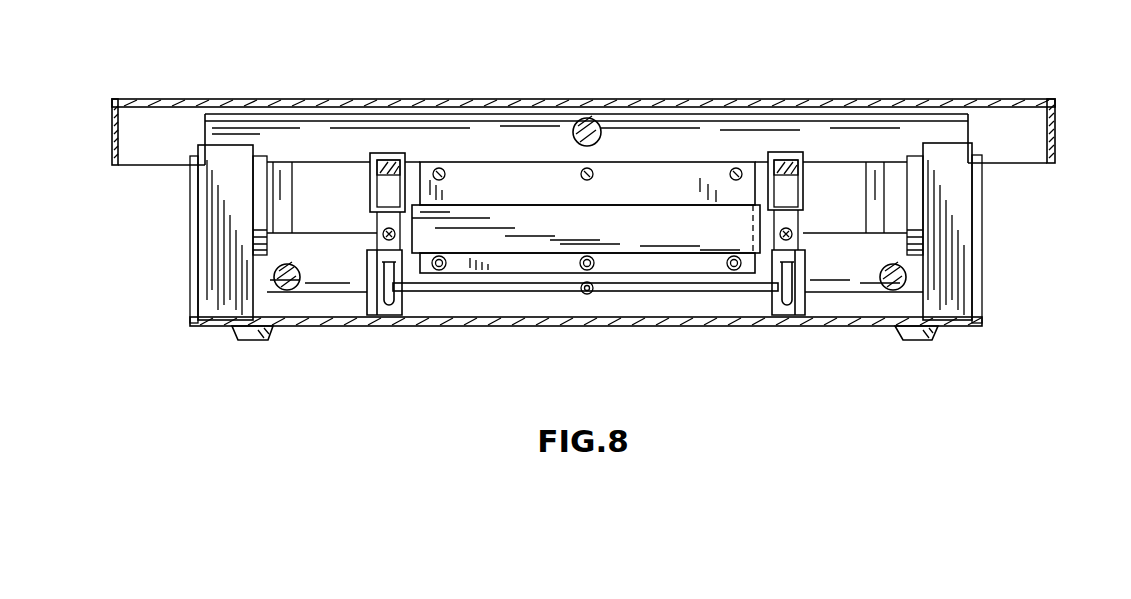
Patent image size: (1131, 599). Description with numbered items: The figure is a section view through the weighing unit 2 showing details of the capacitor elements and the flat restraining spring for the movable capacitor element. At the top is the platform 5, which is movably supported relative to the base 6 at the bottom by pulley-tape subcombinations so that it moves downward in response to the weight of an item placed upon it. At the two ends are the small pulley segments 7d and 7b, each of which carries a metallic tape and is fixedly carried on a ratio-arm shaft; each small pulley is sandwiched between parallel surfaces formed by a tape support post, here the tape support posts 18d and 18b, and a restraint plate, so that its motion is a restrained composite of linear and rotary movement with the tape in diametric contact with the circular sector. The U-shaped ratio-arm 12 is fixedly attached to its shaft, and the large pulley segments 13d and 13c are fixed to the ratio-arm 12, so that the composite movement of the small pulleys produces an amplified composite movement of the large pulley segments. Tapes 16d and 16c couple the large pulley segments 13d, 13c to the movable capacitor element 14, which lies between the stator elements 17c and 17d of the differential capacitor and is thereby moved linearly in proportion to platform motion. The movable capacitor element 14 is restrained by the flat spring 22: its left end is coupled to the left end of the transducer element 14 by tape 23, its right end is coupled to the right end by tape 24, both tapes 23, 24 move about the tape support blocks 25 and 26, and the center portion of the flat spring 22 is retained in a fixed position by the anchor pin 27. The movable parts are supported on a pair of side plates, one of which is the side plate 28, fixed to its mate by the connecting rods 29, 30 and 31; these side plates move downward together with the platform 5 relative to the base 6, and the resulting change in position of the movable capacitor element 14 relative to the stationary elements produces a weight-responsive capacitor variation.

The weighing unit 2 is at (356, 94).
The platform 5 is at (247, 98).
The base 6 is at (503, 321).
The small pulley segment 7b is at (913, 188).
The small pulley segment 7d is at (260, 193).
The U-shaped ratio-arm 12 is at (322, 177).
The large pulley segment 13c is at (805, 152).
The large pulley segment 13d is at (405, 155).
The movable capacitor element 14 is at (693, 218).
The tape 16c is at (773, 180).
The tape 16d is at (368, 160).
The stator element 17c is at (527, 172).
The stator element 17d is at (652, 262).
The tape support post 18b is at (957, 240).
The tape support post 18d is at (218, 246).
The flat spring 22 is at (550, 292).
The tape 23 is at (372, 296).
The tape 24 is at (794, 289).
The tape support block 25 is at (395, 314).
The tape support block 26 is at (767, 314).
The anchor pin 27 is at (592, 294).
The side plate 28 is at (505, 125).
The connecting rod 29 is at (587, 118).
The connecting rod 30 is at (890, 292).
The connecting rod 31 is at (287, 292).